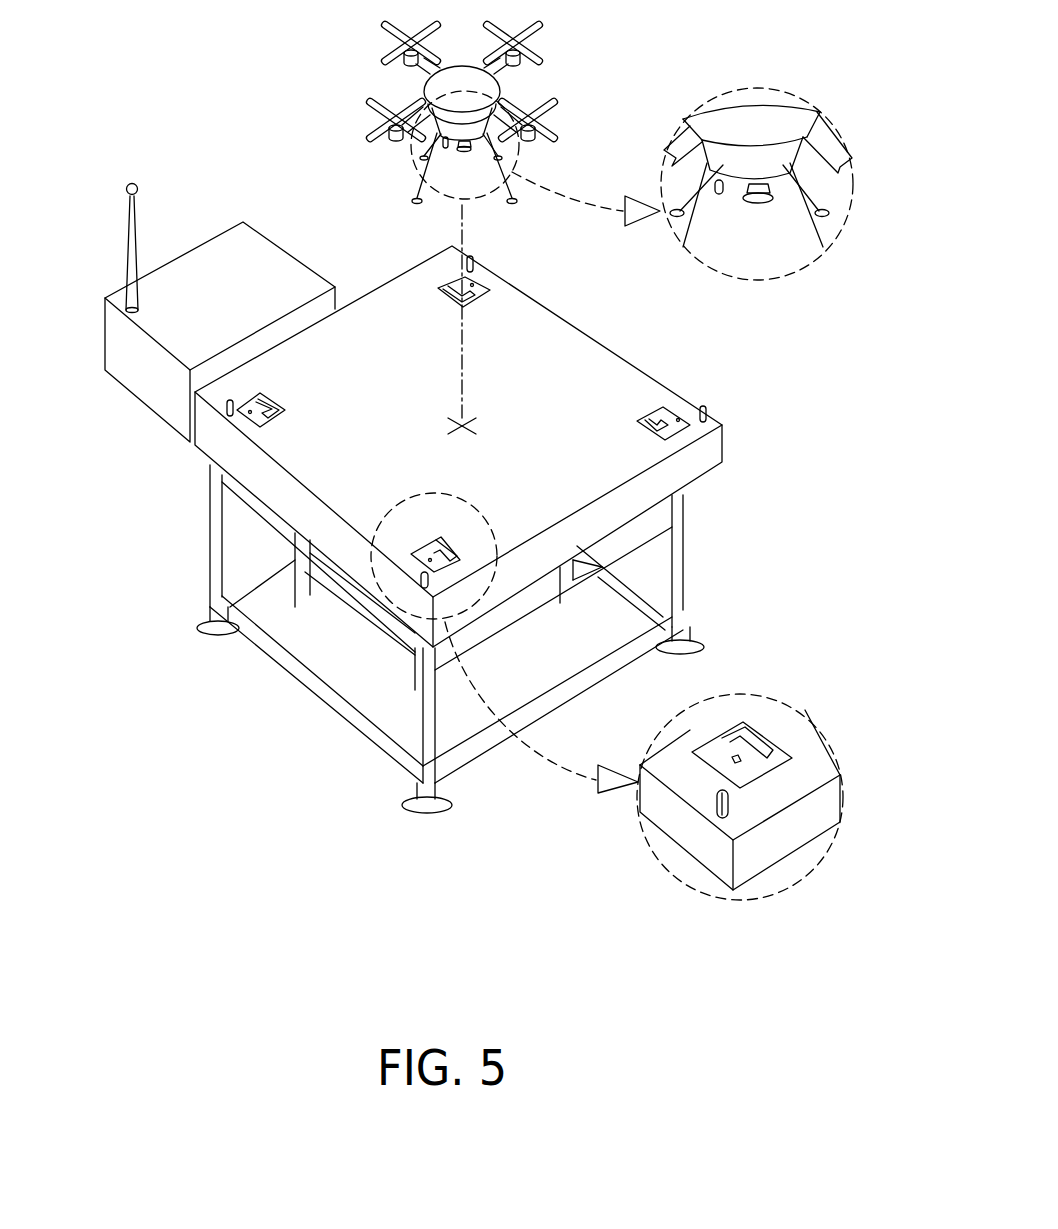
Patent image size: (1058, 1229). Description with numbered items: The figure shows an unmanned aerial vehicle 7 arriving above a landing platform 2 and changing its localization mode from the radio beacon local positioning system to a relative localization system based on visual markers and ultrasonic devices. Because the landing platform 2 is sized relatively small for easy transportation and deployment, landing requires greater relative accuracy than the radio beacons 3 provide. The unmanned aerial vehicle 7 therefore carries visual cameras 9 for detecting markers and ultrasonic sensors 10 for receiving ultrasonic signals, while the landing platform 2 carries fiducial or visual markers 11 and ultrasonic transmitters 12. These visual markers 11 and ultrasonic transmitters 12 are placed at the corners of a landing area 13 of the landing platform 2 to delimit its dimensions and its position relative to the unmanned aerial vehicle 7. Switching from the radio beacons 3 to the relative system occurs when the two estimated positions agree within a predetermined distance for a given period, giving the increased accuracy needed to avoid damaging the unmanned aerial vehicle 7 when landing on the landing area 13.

The landing platform 2 is at (303, 503).
The radio beacon 3 is at (160, 401).
The unmanned aerial vehicle 7 is at (437, 88).
The visual camera 9 is at (763, 198).
The ultrasonic sensor 10 is at (719, 194).
The visual marker 11 is at (443, 285).
The ultrasonic transmitter 12 is at (475, 257).
The landing area 13 is at (493, 402).